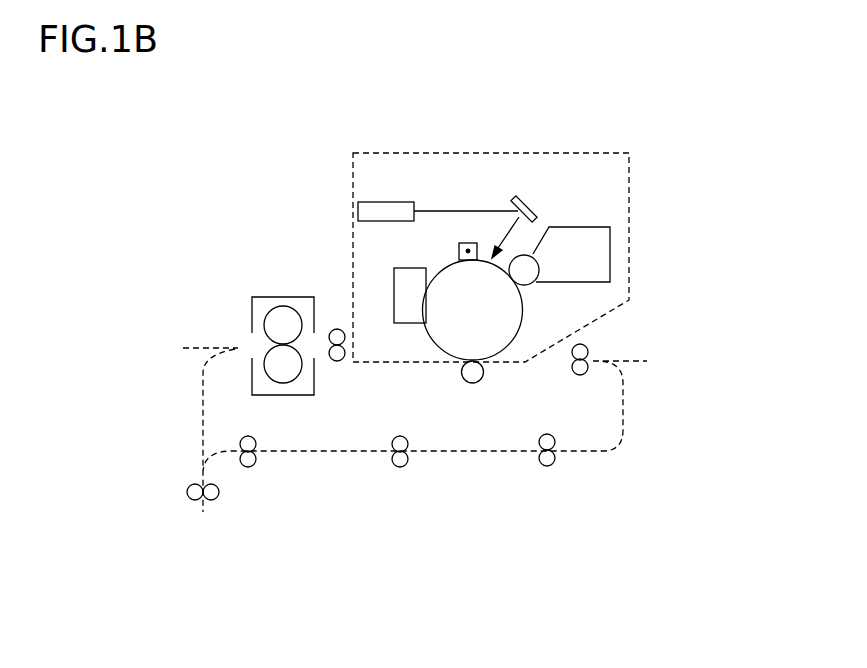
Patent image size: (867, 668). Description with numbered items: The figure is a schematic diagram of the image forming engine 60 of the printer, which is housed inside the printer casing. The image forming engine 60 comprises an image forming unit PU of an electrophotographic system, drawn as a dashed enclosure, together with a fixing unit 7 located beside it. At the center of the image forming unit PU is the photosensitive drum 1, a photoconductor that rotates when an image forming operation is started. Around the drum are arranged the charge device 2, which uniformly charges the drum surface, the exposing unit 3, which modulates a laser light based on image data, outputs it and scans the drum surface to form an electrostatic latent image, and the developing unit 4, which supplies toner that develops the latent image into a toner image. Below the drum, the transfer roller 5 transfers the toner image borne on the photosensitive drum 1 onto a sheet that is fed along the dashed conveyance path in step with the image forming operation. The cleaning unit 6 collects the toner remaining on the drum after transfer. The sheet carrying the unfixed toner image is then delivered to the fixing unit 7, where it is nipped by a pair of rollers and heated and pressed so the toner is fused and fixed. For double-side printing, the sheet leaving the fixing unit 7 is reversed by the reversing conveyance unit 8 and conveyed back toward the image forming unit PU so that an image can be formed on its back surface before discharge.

The photosensitive drum 1 is at (525, 310).
The charge device 2 is at (468, 243).
The exposing unit 3 is at (383, 202).
The developing unit 4 is at (582, 227).
The transfer roller 5 is at (474, 384).
The cleaning unit 6 is at (410, 268).
The fixing unit 7 is at (287, 296).
The reversing conveyance unit 8 is at (400, 495).
The image forming engine 60 is at (306, 176).
The image forming unit PU is at (631, 178).